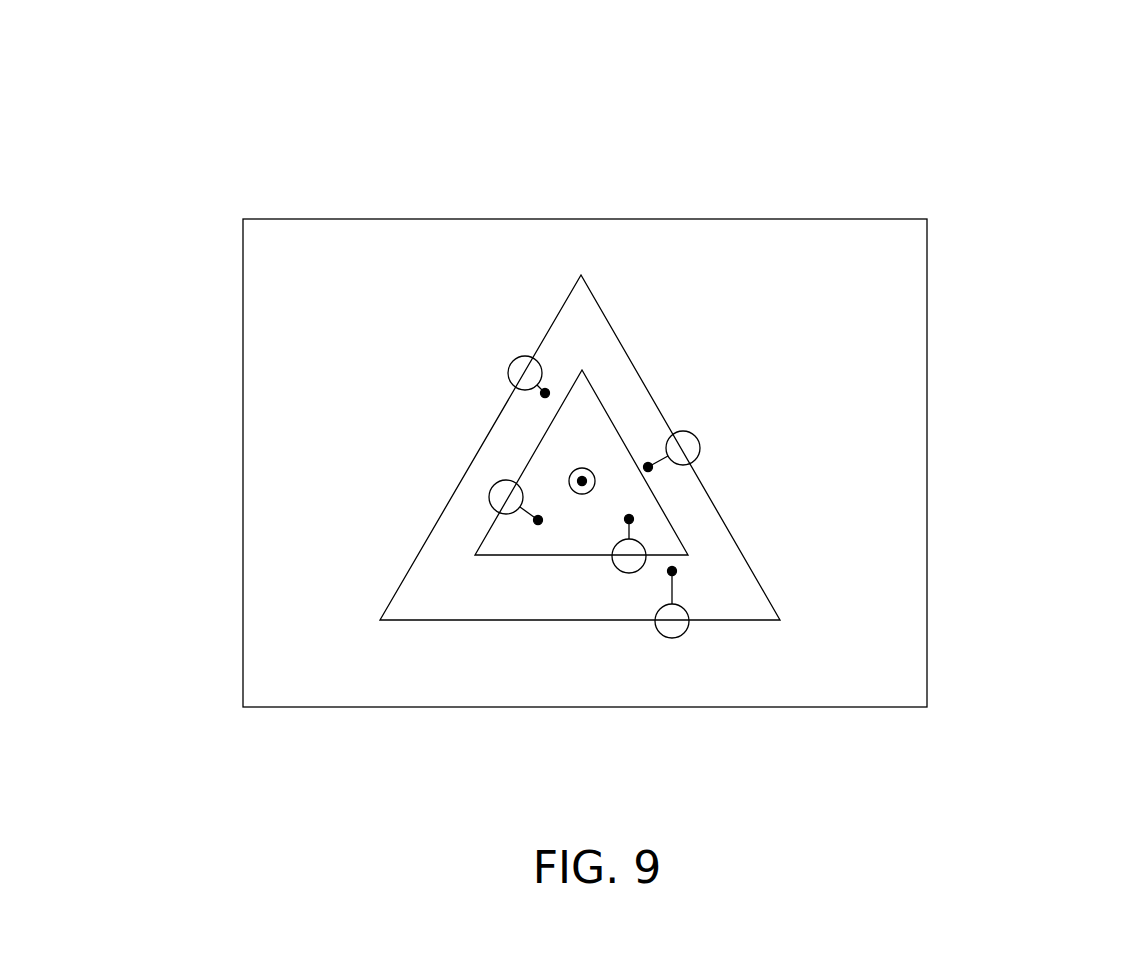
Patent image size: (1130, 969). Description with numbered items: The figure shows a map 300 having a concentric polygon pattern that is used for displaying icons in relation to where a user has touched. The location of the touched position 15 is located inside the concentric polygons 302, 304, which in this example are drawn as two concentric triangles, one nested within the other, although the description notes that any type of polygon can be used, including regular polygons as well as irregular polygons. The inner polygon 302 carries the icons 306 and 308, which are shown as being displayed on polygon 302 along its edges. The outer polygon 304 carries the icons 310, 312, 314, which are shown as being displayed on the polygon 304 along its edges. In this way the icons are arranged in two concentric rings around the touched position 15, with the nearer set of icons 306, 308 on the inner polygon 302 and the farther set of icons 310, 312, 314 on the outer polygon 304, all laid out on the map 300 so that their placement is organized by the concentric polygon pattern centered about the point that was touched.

The map 300 is at (985, 105).
The concentric polygon 302 is at (687, 536).
The concentric polygon 304 is at (717, 504).
The touched position 15 is at (585, 468).
The icon 306 is at (624, 572).
The icon 308 is at (489, 495).
The icon 310 is at (700, 443).
The icon 312 is at (670, 638).
The icon 314 is at (513, 361).